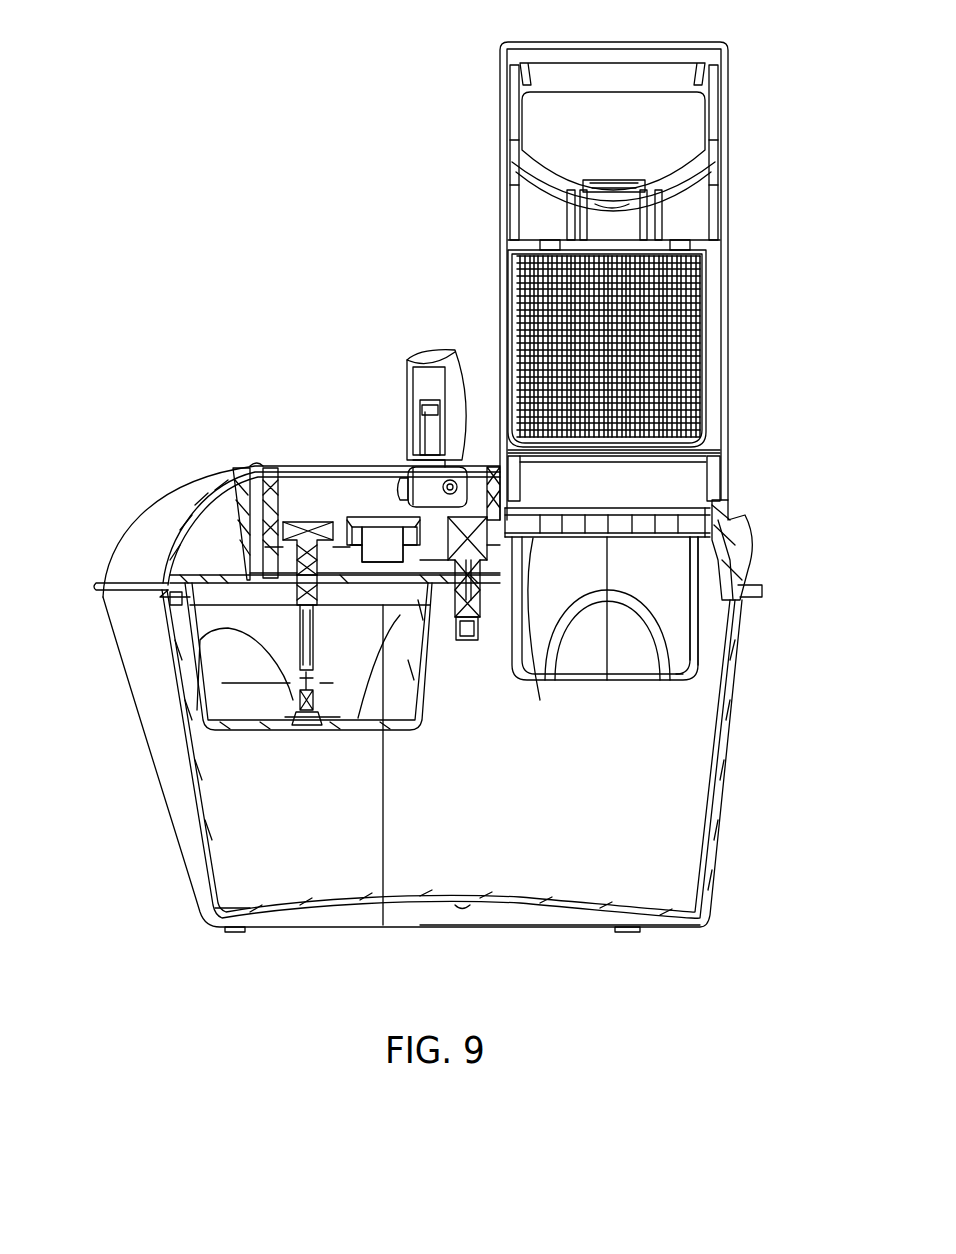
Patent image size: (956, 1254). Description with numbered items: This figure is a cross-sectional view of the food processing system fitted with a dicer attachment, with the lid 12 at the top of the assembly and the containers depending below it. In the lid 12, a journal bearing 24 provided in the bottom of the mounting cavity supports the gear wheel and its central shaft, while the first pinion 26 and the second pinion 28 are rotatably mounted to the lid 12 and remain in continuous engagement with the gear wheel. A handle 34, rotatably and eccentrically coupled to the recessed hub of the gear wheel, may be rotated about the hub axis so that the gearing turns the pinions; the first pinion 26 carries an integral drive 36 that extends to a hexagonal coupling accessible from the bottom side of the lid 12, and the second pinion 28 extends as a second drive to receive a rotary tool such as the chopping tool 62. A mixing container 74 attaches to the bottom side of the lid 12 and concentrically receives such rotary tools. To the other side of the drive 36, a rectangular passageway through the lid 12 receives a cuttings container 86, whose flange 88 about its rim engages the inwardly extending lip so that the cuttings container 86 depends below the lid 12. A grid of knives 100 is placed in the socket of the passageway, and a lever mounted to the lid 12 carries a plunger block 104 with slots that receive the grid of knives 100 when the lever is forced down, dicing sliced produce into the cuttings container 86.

The lid 12 is at (175, 490).
The journal bearing 24 is at (372, 517).
The first pinion 26 is at (480, 517).
The second pinion 28 is at (306, 520).
The handle 34 is at (427, 366).
The drive 36 is at (470, 640).
The chopping tool 62 is at (323, 683).
The mixing container 74 is at (160, 620).
The cuttings container 86 is at (683, 683).
The flange 88 is at (548, 683).
The grid of knives 100 is at (704, 519).
The plunger block 104 is at (705, 268).